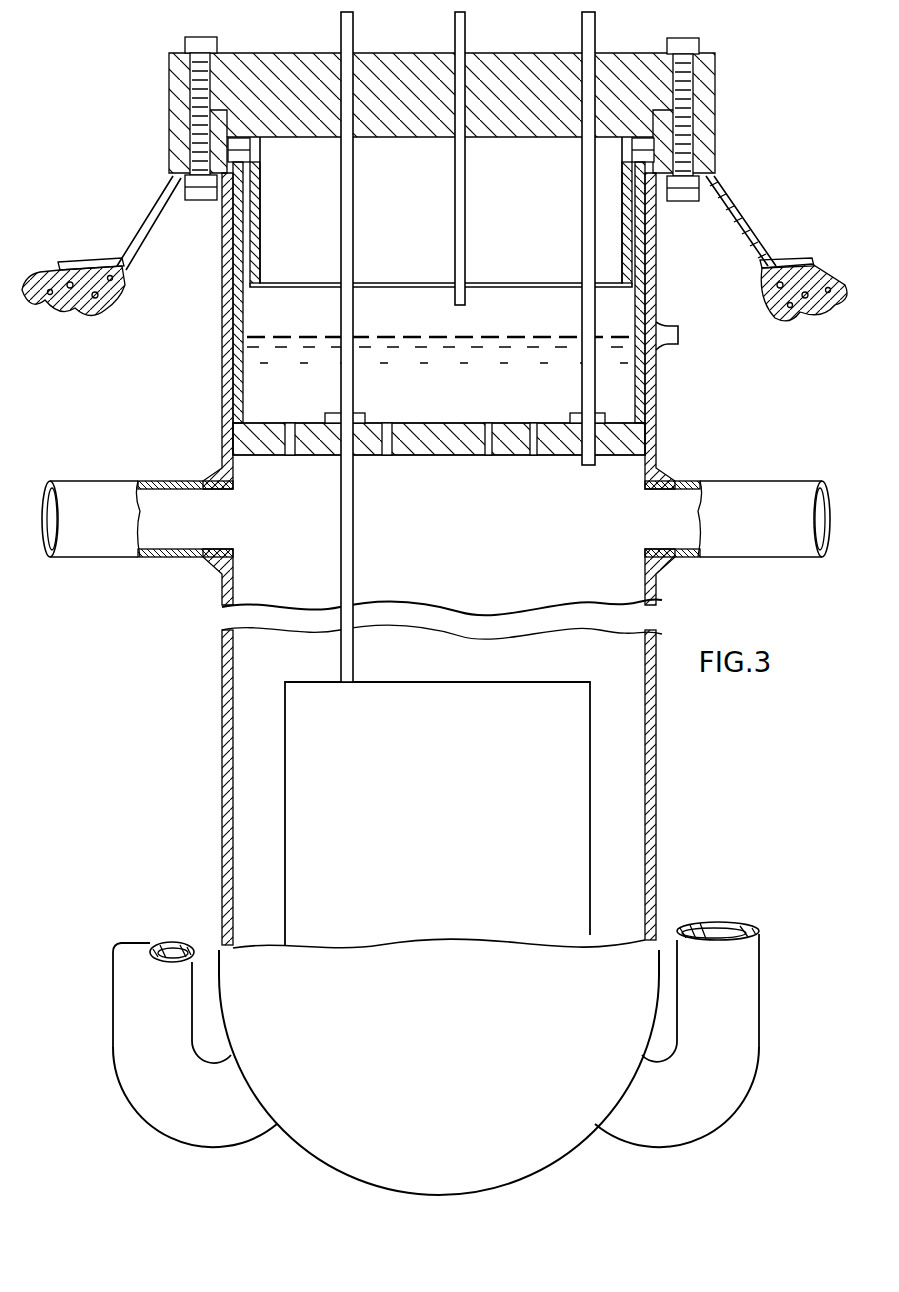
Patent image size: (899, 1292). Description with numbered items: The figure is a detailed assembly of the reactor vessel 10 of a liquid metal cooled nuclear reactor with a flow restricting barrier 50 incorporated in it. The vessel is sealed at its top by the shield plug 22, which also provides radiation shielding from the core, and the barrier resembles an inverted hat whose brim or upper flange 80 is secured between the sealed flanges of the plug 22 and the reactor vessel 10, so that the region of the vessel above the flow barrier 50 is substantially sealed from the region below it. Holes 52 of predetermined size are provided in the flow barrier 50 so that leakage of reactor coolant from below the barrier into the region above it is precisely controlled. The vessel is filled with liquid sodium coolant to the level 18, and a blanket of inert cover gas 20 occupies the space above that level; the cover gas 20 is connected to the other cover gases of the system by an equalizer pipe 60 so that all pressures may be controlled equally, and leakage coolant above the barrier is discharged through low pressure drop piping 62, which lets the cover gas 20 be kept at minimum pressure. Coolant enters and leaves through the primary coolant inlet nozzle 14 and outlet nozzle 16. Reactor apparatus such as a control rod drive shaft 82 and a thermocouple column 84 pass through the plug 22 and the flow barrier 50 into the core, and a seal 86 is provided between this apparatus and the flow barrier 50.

The reactor vessel 10 is at (656, 756).
The primary coolant inlet nozzle 14 is at (730, 940).
The primary coolant outlet nozzle 16 is at (752, 492).
The level of reactor coolant 18 is at (247, 333).
The cover gas 20 is at (623, 317).
The shield plug 22 is at (705, 72).
The flow restricting barrier 50 is at (243, 437).
The holes 52 is at (533, 455).
The equalizer pipe 60 is at (466, 30).
The low pressure drop piping 62 is at (682, 340).
The upper flange 80 is at (640, 208).
The drive shaft 82 is at (341, 34).
The thermocouple column 84 is at (596, 33).
The seal 86 is at (364, 413).